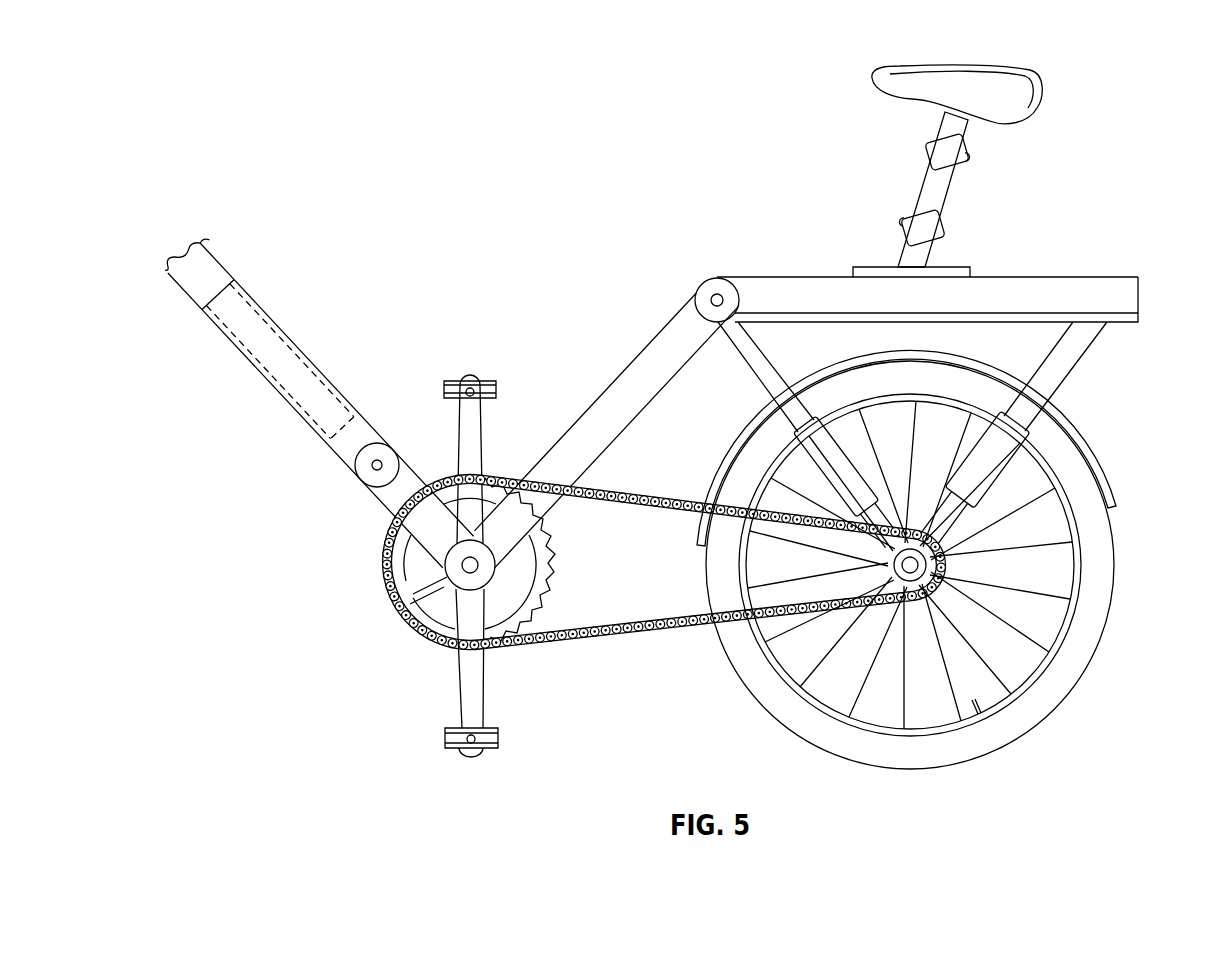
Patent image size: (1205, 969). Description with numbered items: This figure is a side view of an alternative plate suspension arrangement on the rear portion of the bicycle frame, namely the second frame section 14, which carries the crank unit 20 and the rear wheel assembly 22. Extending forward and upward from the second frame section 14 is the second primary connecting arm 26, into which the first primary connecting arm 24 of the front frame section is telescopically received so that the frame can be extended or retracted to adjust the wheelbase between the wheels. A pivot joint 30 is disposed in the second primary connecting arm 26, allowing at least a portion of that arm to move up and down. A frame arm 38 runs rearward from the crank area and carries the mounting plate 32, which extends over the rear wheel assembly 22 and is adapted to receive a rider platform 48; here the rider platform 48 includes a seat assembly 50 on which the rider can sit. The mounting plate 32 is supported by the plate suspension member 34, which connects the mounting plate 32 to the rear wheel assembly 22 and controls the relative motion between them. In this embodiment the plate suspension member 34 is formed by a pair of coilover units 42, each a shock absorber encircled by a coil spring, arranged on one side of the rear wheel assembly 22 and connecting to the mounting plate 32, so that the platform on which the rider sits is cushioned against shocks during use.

The second frame section 14 is at (828, 407).
The crank unit 20 is at (437, 612).
The rear wheel assembly 22 is at (1097, 603).
The first primary connecting arm 24 is at (208, 270).
The second primary connecting arm 26 is at (293, 365).
The pivot joint 30 is at (370, 478).
The mounting plate 32 is at (1123, 318).
The plate suspension member 34 is at (1060, 402).
The frame arm 38 is at (622, 388).
The coilover unit 42 is at (830, 476).
The rider platform 48 is at (1090, 277).
The seat assembly 50 is at (950, 196).